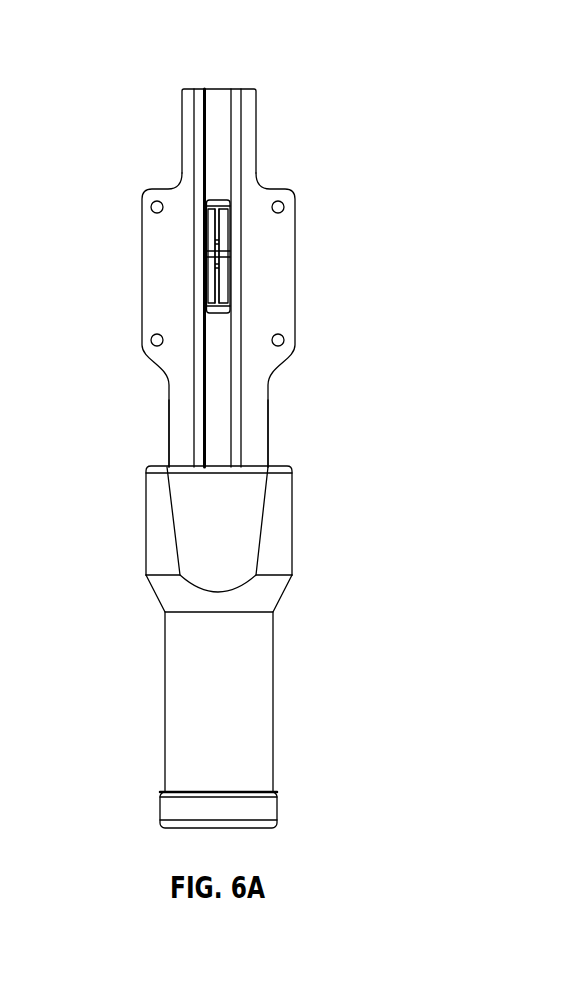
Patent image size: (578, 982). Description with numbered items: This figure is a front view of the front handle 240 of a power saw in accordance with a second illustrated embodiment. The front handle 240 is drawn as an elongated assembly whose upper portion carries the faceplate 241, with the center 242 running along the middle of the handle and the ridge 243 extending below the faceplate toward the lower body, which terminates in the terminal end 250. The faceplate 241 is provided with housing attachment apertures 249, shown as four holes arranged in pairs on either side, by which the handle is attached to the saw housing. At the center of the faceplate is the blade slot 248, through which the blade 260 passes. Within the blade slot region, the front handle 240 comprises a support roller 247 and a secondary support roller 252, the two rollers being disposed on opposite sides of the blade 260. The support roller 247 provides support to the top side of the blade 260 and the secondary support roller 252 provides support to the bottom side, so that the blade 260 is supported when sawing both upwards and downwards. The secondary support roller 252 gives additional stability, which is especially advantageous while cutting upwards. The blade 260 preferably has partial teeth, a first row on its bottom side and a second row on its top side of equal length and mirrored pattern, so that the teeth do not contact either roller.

The front handle 240 is at (342, 123).
The faceplate 241 is at (153, 282).
The center 242 is at (218, 95).
The ridge 243 is at (222, 407).
The support roller 247 is at (227, 223).
The blade slot 248 is at (216, 200).
The housing attachment apertures 249 is at (151, 205).
The terminal end 250 is at (255, 740).
The secondary support roller 252 is at (227, 298).
The blade 260 is at (227, 257).